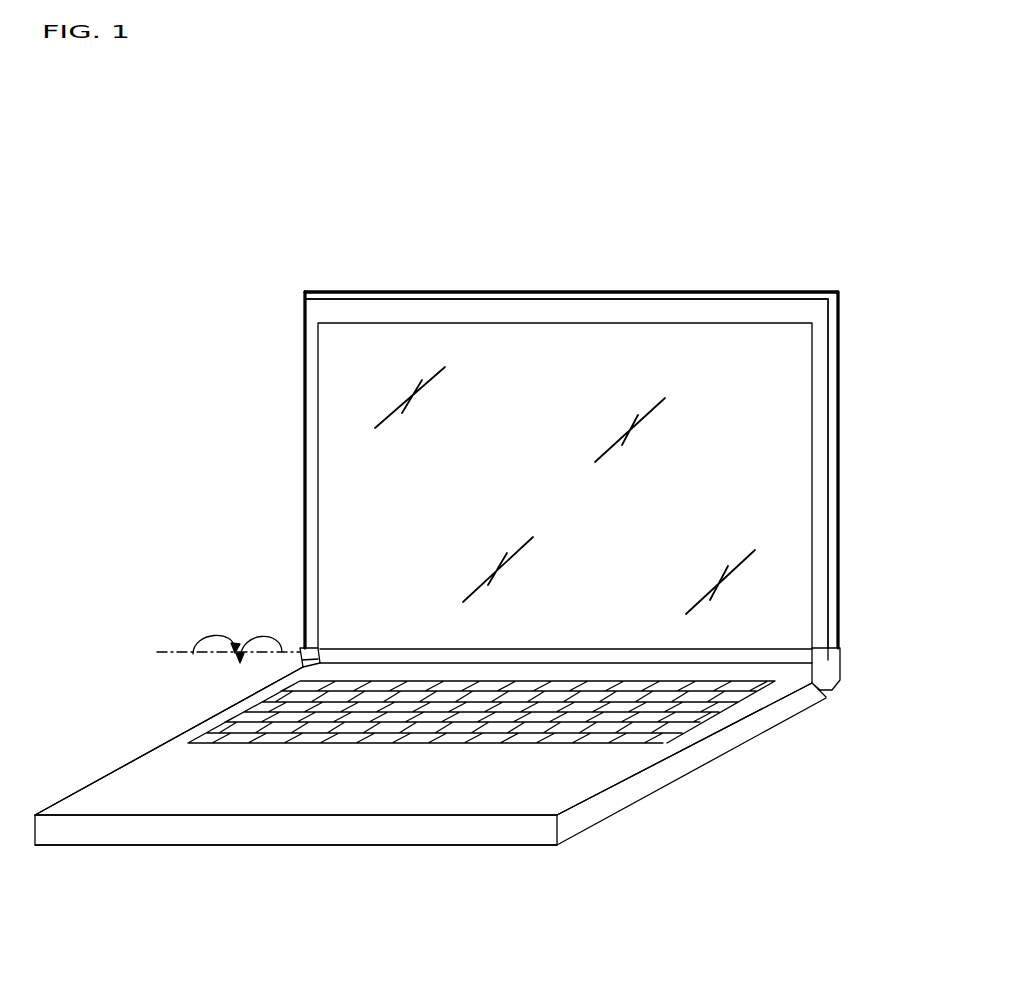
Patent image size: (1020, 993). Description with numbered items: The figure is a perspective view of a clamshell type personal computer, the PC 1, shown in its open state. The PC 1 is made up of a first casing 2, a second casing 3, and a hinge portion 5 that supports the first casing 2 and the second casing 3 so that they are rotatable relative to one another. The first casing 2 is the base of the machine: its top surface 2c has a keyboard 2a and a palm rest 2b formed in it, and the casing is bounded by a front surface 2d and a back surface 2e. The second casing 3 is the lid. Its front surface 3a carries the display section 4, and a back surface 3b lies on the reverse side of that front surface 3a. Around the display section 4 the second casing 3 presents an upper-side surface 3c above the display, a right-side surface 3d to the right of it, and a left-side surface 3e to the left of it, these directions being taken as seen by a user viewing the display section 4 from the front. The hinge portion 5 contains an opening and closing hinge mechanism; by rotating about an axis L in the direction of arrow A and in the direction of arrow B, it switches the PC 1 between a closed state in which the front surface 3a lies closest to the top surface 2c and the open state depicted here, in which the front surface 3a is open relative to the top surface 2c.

The PC 1 is at (172, 443).
The first casing 2 is at (131, 870).
The keyboard 2a is at (215, 722).
The palm rest 2b is at (168, 741).
The top surface 2c is at (84, 720).
The front surface 2d is at (350, 833).
The back surface 2e is at (392, 848).
The second casing 3 is at (298, 289).
The front surface 3a is at (822, 361).
The back surface 3b is at (578, 291).
The upper-side surface 3c is at (418, 291).
The right-side surface 3d is at (833, 424).
The left-side surface 3e is at (306, 435).
The display section 4 is at (335, 387).
The hinge portion 5 is at (298, 650).
The axis L is at (160, 652).
The arrow A is at (203, 640).
The arrow B is at (247, 646).